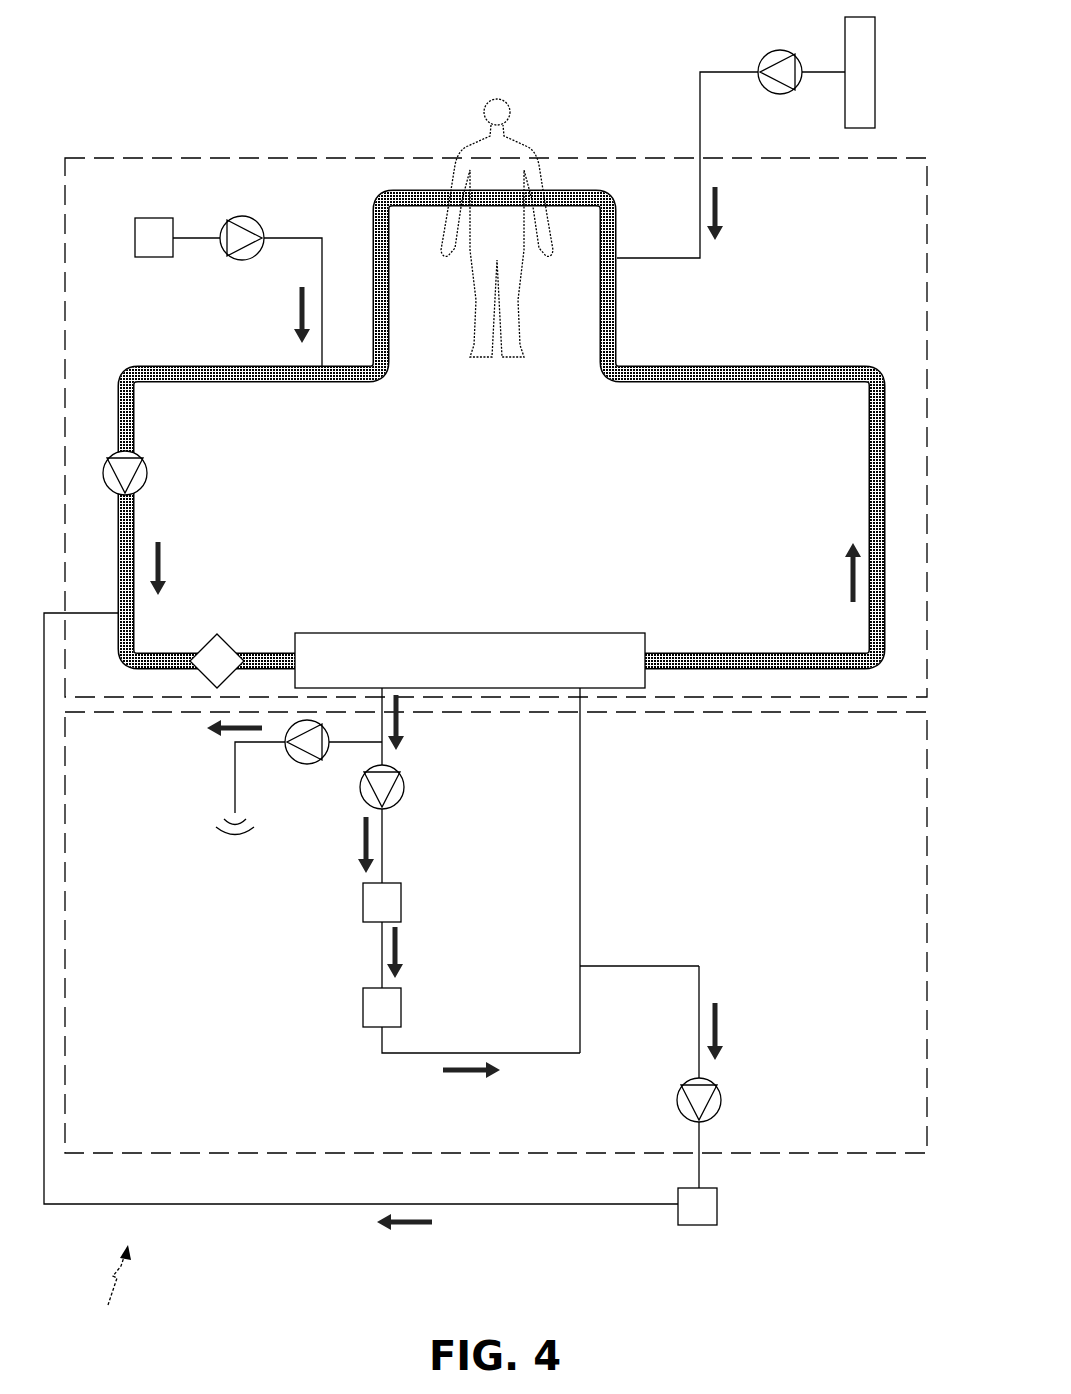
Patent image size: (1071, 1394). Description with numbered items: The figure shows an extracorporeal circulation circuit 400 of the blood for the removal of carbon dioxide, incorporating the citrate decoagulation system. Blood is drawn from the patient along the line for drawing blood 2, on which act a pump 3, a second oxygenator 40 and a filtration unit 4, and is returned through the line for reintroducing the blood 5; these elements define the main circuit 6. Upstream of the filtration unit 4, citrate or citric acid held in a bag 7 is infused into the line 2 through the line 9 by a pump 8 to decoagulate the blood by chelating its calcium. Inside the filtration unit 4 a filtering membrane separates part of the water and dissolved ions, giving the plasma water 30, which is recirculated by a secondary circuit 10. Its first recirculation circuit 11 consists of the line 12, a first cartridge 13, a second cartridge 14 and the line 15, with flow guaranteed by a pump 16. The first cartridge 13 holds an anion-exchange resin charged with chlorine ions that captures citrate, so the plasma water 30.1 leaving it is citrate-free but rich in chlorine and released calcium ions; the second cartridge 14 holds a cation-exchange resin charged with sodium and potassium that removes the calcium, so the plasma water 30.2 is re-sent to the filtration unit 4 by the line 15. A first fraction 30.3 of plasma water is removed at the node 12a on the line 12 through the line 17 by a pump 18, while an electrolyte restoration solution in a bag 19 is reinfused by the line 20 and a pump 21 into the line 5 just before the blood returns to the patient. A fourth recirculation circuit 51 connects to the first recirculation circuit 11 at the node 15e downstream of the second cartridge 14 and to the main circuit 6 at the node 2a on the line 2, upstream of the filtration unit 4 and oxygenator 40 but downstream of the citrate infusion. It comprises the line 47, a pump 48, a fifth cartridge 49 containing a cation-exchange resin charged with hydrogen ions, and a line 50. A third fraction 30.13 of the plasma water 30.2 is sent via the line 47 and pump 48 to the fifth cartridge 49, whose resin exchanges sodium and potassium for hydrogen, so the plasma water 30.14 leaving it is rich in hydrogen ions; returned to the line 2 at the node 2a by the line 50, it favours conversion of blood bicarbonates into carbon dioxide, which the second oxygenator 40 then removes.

The line for drawing blood 2 is at (232, 364).
The node 2a is at (117, 608).
The pump 3 is at (147, 479).
The filtration unit 4 is at (462, 673).
The line for reintroducing the blood 5 is at (868, 466).
The main circuit 6 is at (108, 157).
The bag 7 is at (153, 217).
The pump 8 is at (243, 216).
The line 9 is at (322, 236).
The secondary circuit 10 is at (880, 1160).
The first recirculation circuit 11 is at (582, 1031).
The line 12 is at (382, 730).
The node 12a is at (384, 745).
The first cartridge 13 is at (362, 910).
The second cartridge 14 is at (362, 1020).
The line 15 is at (582, 768).
The node 15e is at (582, 960).
The pump 16 is at (404, 790).
The line 17 is at (232, 790).
The pump 18 is at (297, 764).
The bag 19 is at (866, 80).
The line 20 is at (700, 106).
The pump 21 is at (762, 52).
The plasma water 30 is at (410, 722).
The plasma water flowing out of the first cartridge 30.1 is at (418, 952).
The plasma water flowing out of the second cartridge 30.2 is at (471, 1083).
The first fraction of plasma water 30.3 is at (213, 740).
The third fraction of plasma water 30.13 is at (747, 1031).
The plasma water flowing out of the fifth cartridge 30.14 is at (410, 1237).
The second oxygenator 40 is at (227, 640).
The line 47 is at (697, 1058).
The pump 48 is at (722, 1106).
The fifth cartridge 49 is at (718, 1210).
The line 50 is at (555, 1205).
The fourth recirculation circuit 51 is at (690, 963).
The extracorporeal circulation circuit 400 is at (106, 1289).